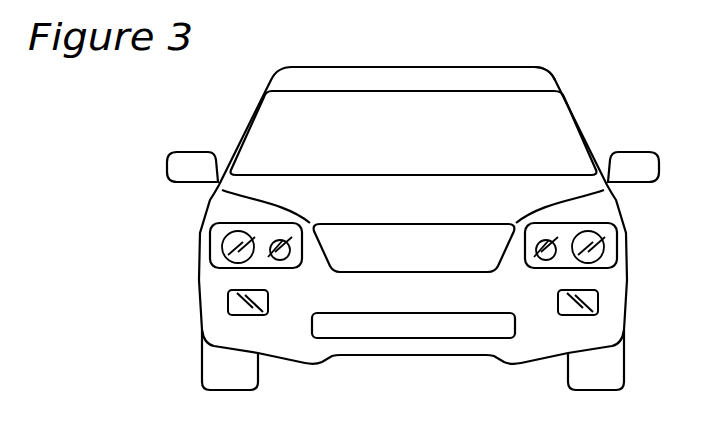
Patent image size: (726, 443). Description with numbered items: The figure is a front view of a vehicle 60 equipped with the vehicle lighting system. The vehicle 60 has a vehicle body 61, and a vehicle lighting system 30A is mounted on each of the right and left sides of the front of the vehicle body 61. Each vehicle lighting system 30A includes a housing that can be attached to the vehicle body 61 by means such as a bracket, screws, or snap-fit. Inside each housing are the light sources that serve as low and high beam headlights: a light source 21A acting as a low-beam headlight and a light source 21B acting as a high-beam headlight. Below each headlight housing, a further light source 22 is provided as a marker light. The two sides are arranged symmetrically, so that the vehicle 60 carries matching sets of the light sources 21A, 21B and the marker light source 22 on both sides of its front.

The vehicle 60 is at (580, 94).
The vehicle body 61 is at (556, 73).
The vehicle lighting system 30A is at (202, 233).
The light source 21B is at (226, 248).
The light source 21A is at (284, 260).
The light source 22 is at (229, 298).